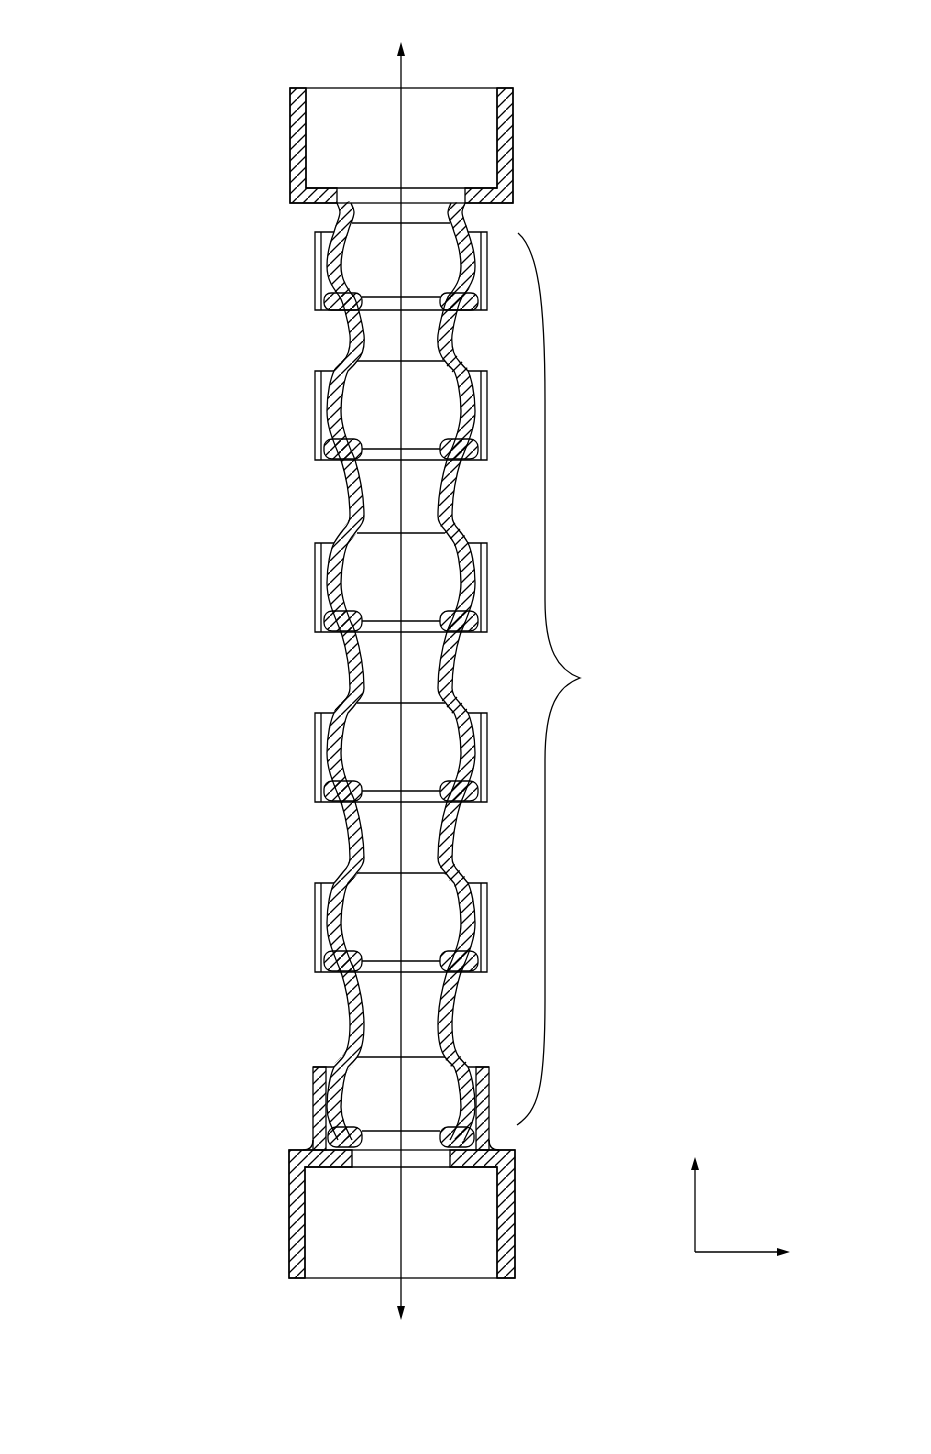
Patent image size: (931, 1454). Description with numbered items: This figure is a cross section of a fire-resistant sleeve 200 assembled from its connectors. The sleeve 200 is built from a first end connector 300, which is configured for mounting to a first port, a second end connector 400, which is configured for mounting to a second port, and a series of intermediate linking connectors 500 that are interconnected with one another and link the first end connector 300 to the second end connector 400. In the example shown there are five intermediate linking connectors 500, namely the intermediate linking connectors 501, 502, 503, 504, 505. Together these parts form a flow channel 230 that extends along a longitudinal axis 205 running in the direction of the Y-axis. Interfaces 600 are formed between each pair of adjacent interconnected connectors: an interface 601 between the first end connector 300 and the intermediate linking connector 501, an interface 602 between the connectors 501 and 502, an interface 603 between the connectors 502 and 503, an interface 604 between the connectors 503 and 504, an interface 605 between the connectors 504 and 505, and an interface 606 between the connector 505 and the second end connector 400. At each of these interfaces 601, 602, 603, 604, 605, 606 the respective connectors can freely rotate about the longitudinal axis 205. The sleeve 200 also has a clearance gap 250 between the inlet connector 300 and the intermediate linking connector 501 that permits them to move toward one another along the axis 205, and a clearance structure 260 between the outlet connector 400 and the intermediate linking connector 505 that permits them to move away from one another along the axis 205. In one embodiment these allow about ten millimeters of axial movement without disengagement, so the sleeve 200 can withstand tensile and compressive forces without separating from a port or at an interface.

The sleeve 200 is at (142, 42).
The longitudinal axis 205 is at (400, 75).
The flow channel 230 is at (437, 72).
The clearance gap 250 is at (305, 210).
The clearance structure 260 is at (305, 1070).
The first end connector 300 is at (300, 135).
The second end connector 400 is at (290, 1210).
The intermediate linking connectors 500 is at (428, 670).
The intermediate linking connector 501 is at (320, 248).
The intermediate linking connector 502 is at (318, 392).
The intermediate linking connector 503 is at (318, 560).
The intermediate linking connector 504 is at (318, 733).
The intermediate linking connector 505 is at (318, 905).
The interfaces 600 is at (339, 676).
The interface 601 is at (325, 305).
The interface 602 is at (330, 455).
The interface 603 is at (330, 625).
The interface 604 is at (330, 795).
The interface 605 is at (330, 968).
The interface 606 is at (328, 1083).